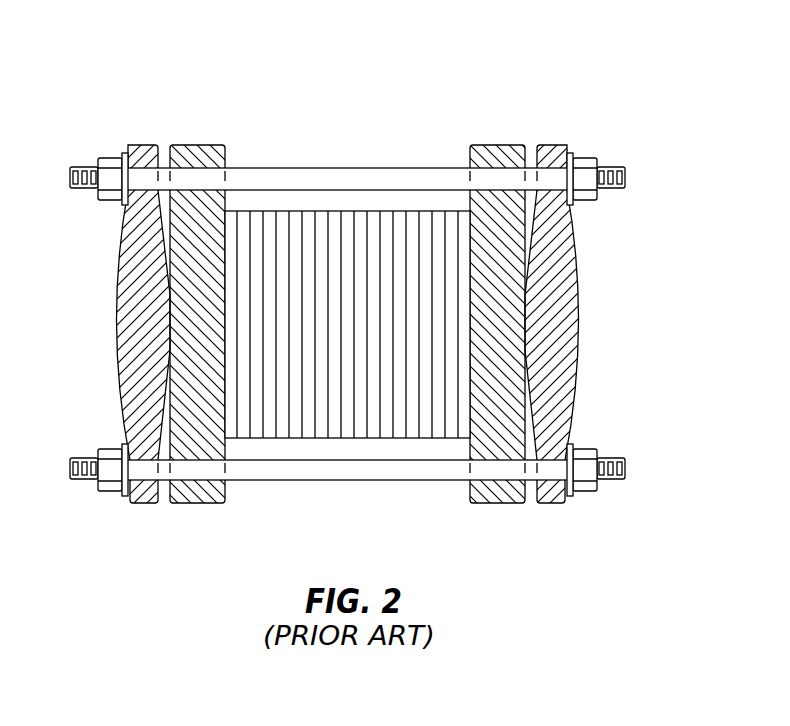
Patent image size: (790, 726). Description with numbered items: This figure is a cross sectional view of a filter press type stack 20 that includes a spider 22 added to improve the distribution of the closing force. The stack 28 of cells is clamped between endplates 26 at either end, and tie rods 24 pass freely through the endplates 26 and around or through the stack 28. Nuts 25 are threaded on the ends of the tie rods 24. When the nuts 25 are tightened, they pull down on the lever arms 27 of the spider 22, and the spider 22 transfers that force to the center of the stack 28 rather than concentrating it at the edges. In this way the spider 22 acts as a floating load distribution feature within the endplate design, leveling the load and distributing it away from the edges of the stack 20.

The filter press type stack 20 is at (265, 92).
The spider 22 is at (386, 324).
The tie rods 24 is at (350, 168).
The nuts 25 is at (593, 160).
The endplates 26 is at (208, 503).
The lever arms 27 is at (557, 385).
The stack 28 is at (387, 438).